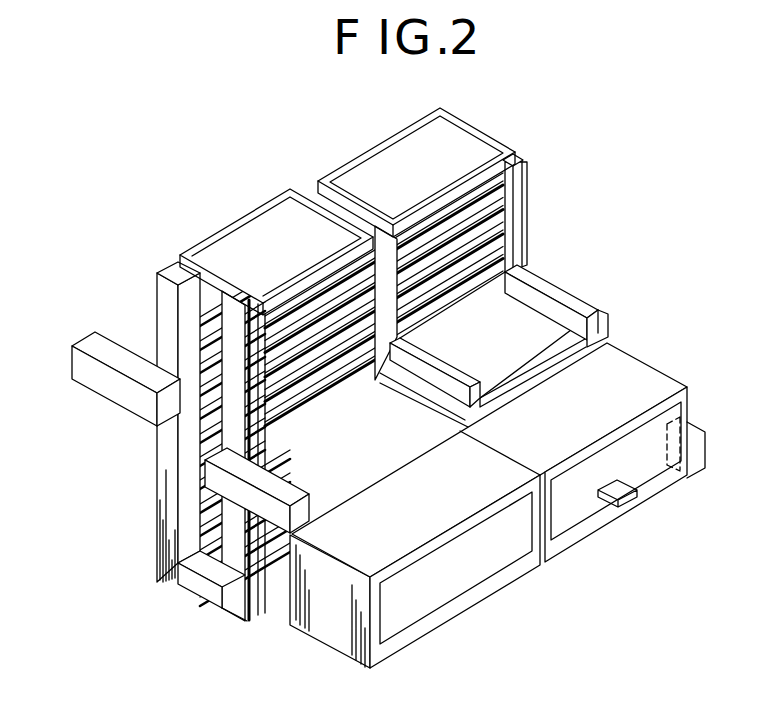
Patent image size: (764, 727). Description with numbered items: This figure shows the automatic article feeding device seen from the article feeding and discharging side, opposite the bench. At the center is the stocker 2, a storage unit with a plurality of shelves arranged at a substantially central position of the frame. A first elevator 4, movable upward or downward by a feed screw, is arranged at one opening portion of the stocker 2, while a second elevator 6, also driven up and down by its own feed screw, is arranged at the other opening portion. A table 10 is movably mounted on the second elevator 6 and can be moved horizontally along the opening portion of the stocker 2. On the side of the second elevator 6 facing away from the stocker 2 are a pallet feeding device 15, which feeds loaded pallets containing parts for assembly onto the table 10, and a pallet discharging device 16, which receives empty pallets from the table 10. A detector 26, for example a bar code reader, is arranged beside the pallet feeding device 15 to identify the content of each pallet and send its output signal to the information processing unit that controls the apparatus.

The stocker 2 is at (512, 156).
The first elevator 4 is at (113, 388).
The second elevator 6 is at (597, 315).
The table 10 is at (530, 318).
The pallet feeding device 15 is at (622, 530).
The pallet discharging device 16 is at (489, 617).
The detector 26 is at (698, 446).